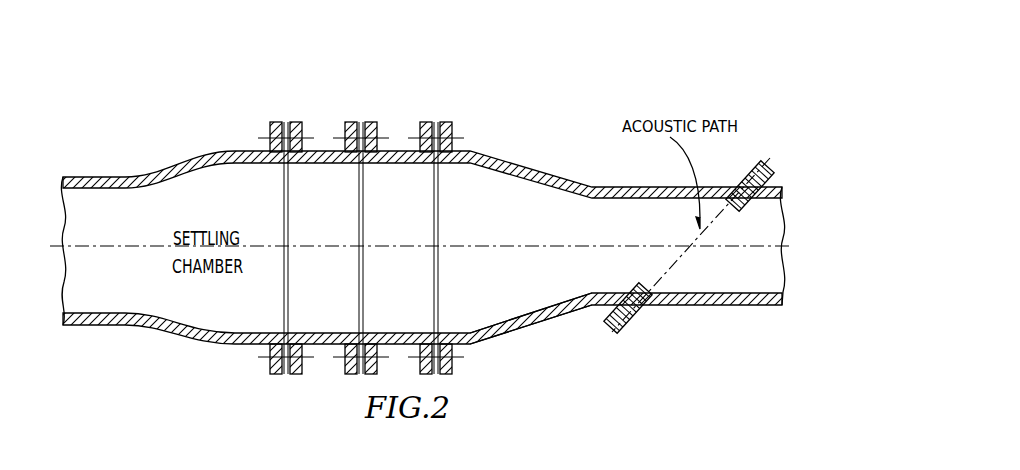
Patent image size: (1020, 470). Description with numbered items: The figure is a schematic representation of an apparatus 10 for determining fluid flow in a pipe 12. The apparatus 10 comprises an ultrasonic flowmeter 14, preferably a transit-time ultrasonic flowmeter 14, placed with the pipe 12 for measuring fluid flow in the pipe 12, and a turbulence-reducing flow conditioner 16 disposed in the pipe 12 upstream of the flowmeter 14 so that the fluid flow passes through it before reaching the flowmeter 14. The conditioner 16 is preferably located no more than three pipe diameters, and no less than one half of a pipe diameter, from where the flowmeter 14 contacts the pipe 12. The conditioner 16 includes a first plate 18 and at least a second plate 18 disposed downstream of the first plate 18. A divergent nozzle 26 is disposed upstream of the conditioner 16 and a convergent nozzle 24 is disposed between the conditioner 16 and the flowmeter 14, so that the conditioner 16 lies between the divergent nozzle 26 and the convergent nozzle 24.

The apparatus 10 is at (547, 135).
The pipe 12 is at (97, 338).
The ultrasonic flowmeter 14 is at (612, 322).
The turbulence-reducing flow conditioner 16 is at (318, 378).
The plate 18 is at (292, 122).
The convergent nozzle 24 is at (529, 340).
The divergent nozzle 26 is at (177, 150).